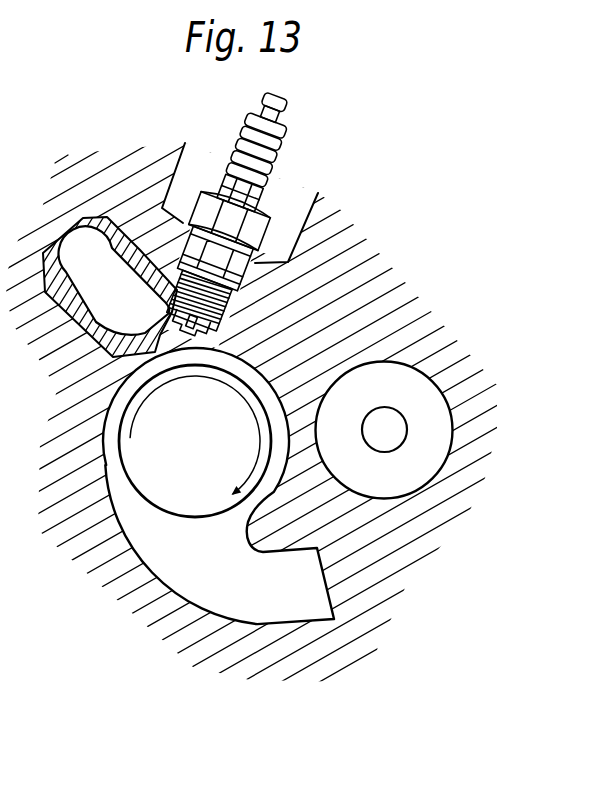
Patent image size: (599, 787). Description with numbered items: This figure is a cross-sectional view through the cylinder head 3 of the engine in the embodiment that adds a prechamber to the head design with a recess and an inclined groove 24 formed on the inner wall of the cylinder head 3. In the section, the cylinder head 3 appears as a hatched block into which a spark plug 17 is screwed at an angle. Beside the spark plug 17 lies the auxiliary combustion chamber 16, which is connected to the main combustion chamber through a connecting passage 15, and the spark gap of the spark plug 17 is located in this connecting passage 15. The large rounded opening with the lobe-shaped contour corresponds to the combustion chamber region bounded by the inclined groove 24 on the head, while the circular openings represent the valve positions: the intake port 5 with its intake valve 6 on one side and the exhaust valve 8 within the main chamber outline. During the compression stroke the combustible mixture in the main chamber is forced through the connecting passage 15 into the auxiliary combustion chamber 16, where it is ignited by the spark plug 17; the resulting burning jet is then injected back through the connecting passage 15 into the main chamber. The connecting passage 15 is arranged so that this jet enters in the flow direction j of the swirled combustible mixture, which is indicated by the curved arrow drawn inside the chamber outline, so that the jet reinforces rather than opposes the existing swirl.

The cylinder head 3 is at (350, 298).
The intake port 5 is at (390, 397).
The intake valve 6 is at (393, 425).
The exhaust valve 8 is at (177, 503).
The connecting passage 15 is at (168, 338).
The auxiliary combustion chamber 16 is at (118, 287).
The spark plug 17 is at (283, 142).
The inclined groove 24 is at (254, 606).
The flow direction j is at (257, 464).